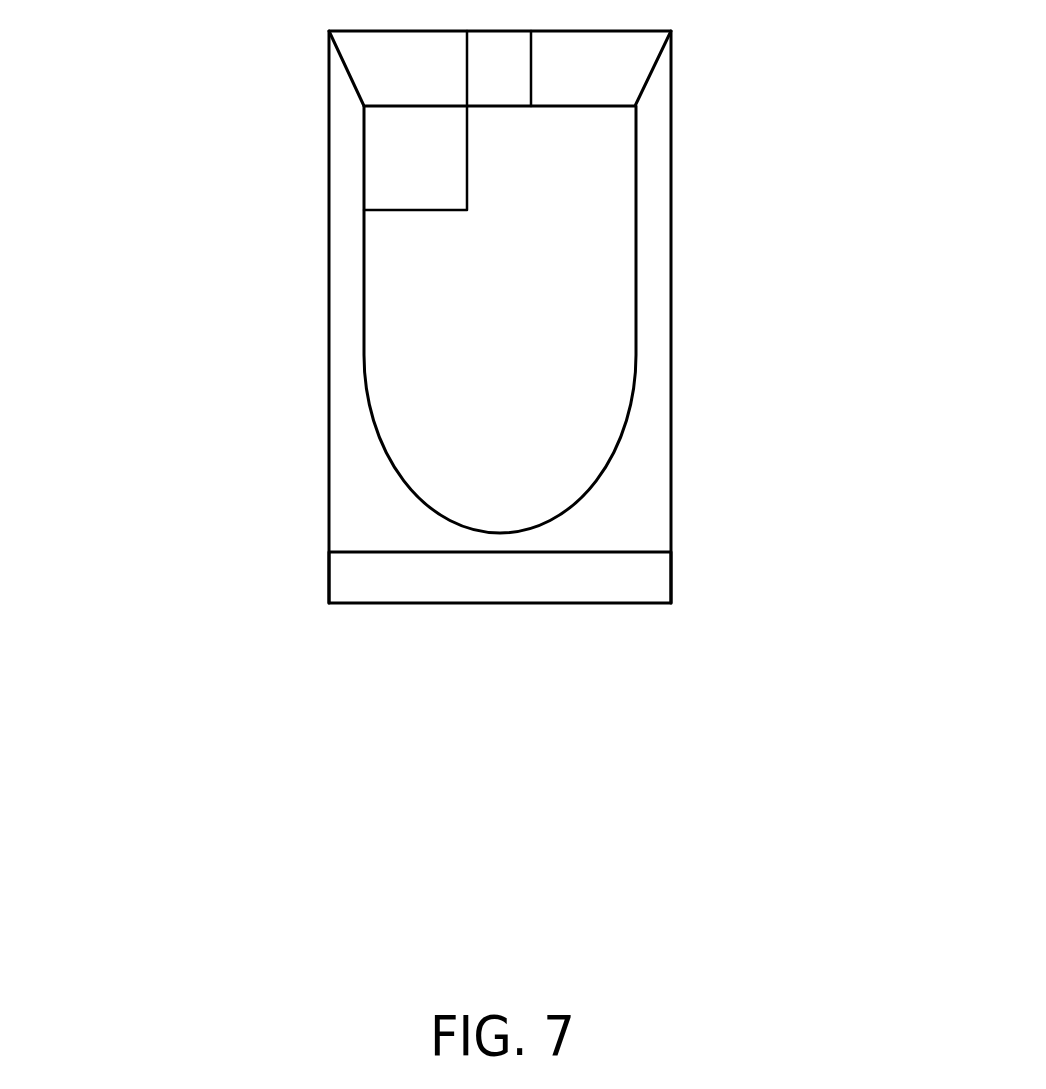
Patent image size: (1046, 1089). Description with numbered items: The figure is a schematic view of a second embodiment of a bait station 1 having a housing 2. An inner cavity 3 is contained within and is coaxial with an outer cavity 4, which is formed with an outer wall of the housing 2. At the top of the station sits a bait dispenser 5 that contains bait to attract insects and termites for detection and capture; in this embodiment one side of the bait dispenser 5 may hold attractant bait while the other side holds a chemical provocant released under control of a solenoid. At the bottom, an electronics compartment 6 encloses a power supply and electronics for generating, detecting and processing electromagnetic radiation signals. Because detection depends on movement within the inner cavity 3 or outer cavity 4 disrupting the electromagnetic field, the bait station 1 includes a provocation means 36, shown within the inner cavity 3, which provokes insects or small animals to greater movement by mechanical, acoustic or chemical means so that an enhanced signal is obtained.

The bait station 1 is at (258, 107).
The housing 2 is at (328, 357).
The inner cavity 3 is at (602, 288).
The outer cavity 4 is at (635, 493).
The bait dispenser 5 is at (602, 89).
The electronics compartment 6 is at (637, 577).
The provocation means 36 is at (439, 177).